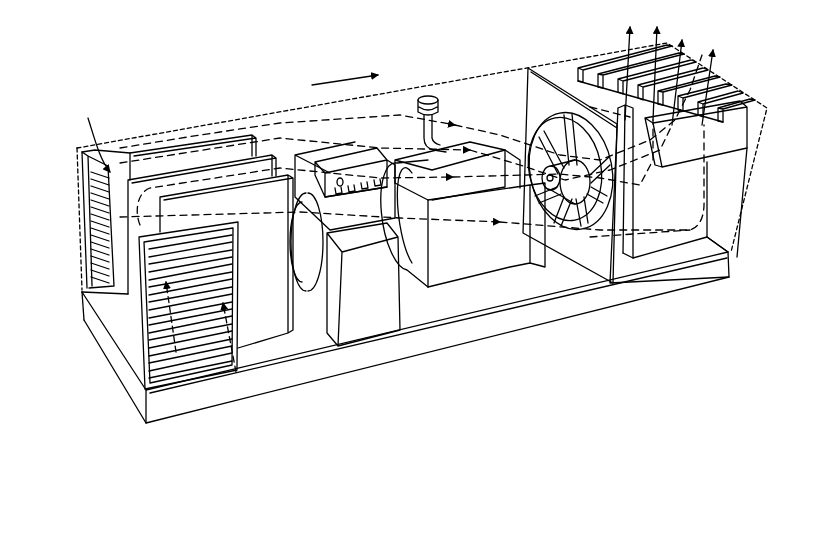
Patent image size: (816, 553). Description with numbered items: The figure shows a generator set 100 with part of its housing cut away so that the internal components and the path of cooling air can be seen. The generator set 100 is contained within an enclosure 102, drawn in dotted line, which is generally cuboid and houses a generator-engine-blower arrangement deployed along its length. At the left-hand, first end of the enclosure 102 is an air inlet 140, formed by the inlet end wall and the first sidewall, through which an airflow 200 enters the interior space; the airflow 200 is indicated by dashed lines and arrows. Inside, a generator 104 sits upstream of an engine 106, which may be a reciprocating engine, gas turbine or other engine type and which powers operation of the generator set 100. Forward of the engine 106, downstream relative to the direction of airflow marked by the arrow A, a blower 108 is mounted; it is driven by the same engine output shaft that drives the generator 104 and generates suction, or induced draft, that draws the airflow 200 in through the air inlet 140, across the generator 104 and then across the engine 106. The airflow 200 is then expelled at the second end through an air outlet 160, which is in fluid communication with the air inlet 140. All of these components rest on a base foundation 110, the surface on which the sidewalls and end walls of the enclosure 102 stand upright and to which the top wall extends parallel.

The generator set 100 is at (464, 102).
The enclosure 102 is at (499, 67).
The generator 104 is at (307, 298).
The engine 106 is at (456, 270).
The blower 108 is at (601, 279).
The base foundation 110 is at (192, 398).
The air inlet 140 is at (98, 246).
The air outlet 160 is at (735, 77).
The airflow 200 is at (143, 149).